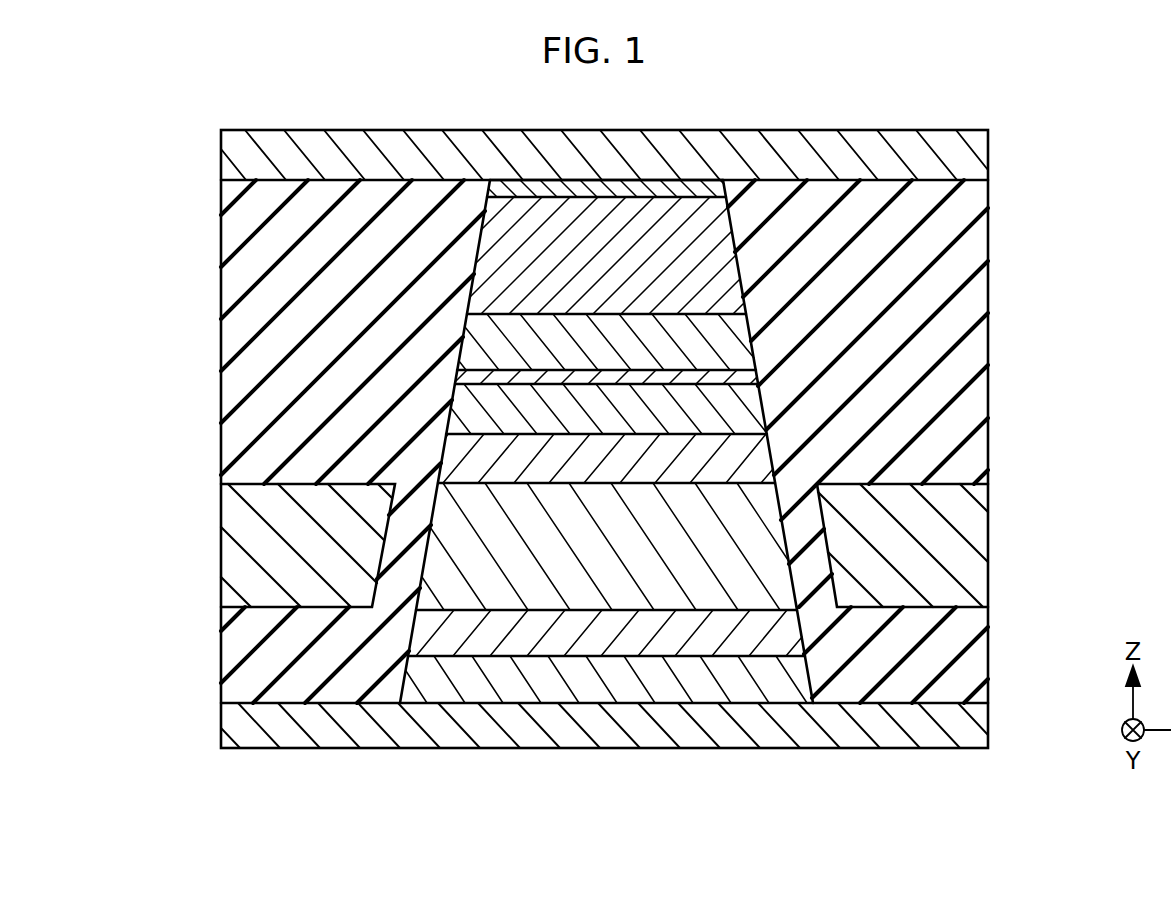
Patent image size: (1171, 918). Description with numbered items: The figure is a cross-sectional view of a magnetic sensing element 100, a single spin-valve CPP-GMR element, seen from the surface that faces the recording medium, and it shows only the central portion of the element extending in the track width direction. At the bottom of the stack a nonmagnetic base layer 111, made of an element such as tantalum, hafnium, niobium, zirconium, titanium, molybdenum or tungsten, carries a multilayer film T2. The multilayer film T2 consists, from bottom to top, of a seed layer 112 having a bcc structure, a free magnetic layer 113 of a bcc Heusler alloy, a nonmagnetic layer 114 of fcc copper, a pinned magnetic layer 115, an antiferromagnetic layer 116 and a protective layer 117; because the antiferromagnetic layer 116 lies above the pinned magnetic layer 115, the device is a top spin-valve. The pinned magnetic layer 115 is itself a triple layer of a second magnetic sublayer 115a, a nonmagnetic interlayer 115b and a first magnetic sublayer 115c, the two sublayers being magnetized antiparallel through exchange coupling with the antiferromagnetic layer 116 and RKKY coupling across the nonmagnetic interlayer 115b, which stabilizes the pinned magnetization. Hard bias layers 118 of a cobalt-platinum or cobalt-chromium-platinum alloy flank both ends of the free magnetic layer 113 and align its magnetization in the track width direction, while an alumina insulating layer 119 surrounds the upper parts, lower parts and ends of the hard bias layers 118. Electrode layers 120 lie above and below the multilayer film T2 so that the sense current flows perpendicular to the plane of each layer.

The magnetic sensing element 100 is at (1026, 113).
The base layer 111 is at (422, 683).
The seed layer 112 is at (602, 642).
The free magnetic layer 113 is at (633, 562).
The nonmagnetic layer 114 is at (675, 460).
The pinned magnetic layer 115 is at (579, 593).
The second magnetic sublayer 115a is at (505, 418).
The nonmagnetic interlayer 115b is at (538, 378).
The first magnetic sublayer 115c is at (582, 345).
The antiferromagnetic layer 116 is at (683, 273).
The protective layer 117 is at (710, 185).
The hard bias layers 118 is at (255, 540).
The insulating layer 119 is at (255, 347).
The electrode layers 120 is at (255, 159).
The multilayer film T2 is at (447, 856).